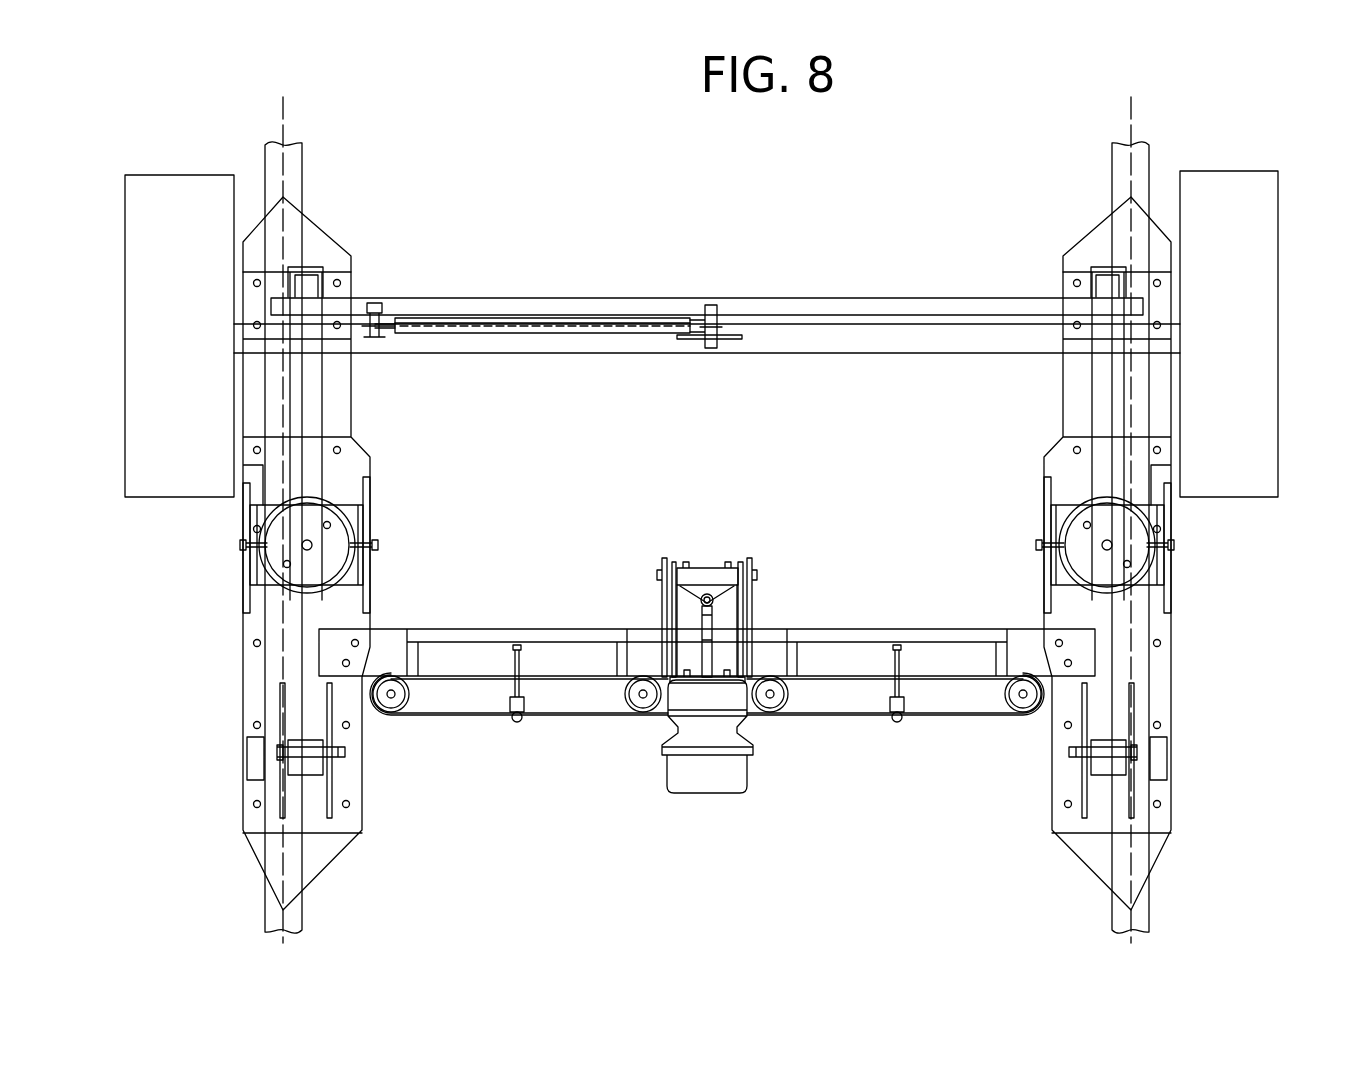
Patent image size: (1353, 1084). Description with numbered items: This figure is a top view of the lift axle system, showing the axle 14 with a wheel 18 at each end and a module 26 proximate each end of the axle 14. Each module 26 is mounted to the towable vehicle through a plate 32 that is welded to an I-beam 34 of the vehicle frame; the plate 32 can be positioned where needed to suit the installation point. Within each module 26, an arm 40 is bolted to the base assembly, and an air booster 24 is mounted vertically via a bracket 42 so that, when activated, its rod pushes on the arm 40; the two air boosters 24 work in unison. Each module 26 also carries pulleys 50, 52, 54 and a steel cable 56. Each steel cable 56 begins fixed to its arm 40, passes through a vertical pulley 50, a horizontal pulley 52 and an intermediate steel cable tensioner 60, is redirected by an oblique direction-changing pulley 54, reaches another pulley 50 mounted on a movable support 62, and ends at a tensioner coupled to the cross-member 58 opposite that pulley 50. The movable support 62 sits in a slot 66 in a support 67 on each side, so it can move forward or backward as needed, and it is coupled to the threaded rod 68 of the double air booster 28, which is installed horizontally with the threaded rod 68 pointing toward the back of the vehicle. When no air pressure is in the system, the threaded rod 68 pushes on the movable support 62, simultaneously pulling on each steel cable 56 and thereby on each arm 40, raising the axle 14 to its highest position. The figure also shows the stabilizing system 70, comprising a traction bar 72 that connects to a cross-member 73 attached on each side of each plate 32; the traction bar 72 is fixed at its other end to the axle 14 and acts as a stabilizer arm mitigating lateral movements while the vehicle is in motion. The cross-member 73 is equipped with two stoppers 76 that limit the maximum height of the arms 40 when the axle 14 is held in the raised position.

The axle 14 is at (858, 345).
The wheels 18 is at (145, 487).
The air booster 24 is at (335, 530).
The module 26 is at (373, 761).
The double air booster 28 is at (748, 752).
The plate 32 is at (313, 238).
The I-beam 34 is at (302, 172).
The arm 40 is at (312, 412).
The bracket 42 is at (368, 566).
The vertical pulley 50 is at (373, 532).
The horizontal pulley 52 is at (391, 705).
The oblique direction-changing pulley 54 is at (643, 705).
The steel cable 56 is at (598, 714).
The cross-member 58 is at (542, 632).
The intermediate steel cable tensioner 60 is at (517, 725).
The movable support 62 is at (710, 568).
The slot 66 is at (676, 566).
The support 67 is at (663, 612).
The threaded rod 68 is at (714, 628).
The stabilizing system 70 is at (708, 290).
The traction bar 72 is at (548, 318).
The cross-member 73 is at (866, 318).
The stoppers 76 is at (312, 282).